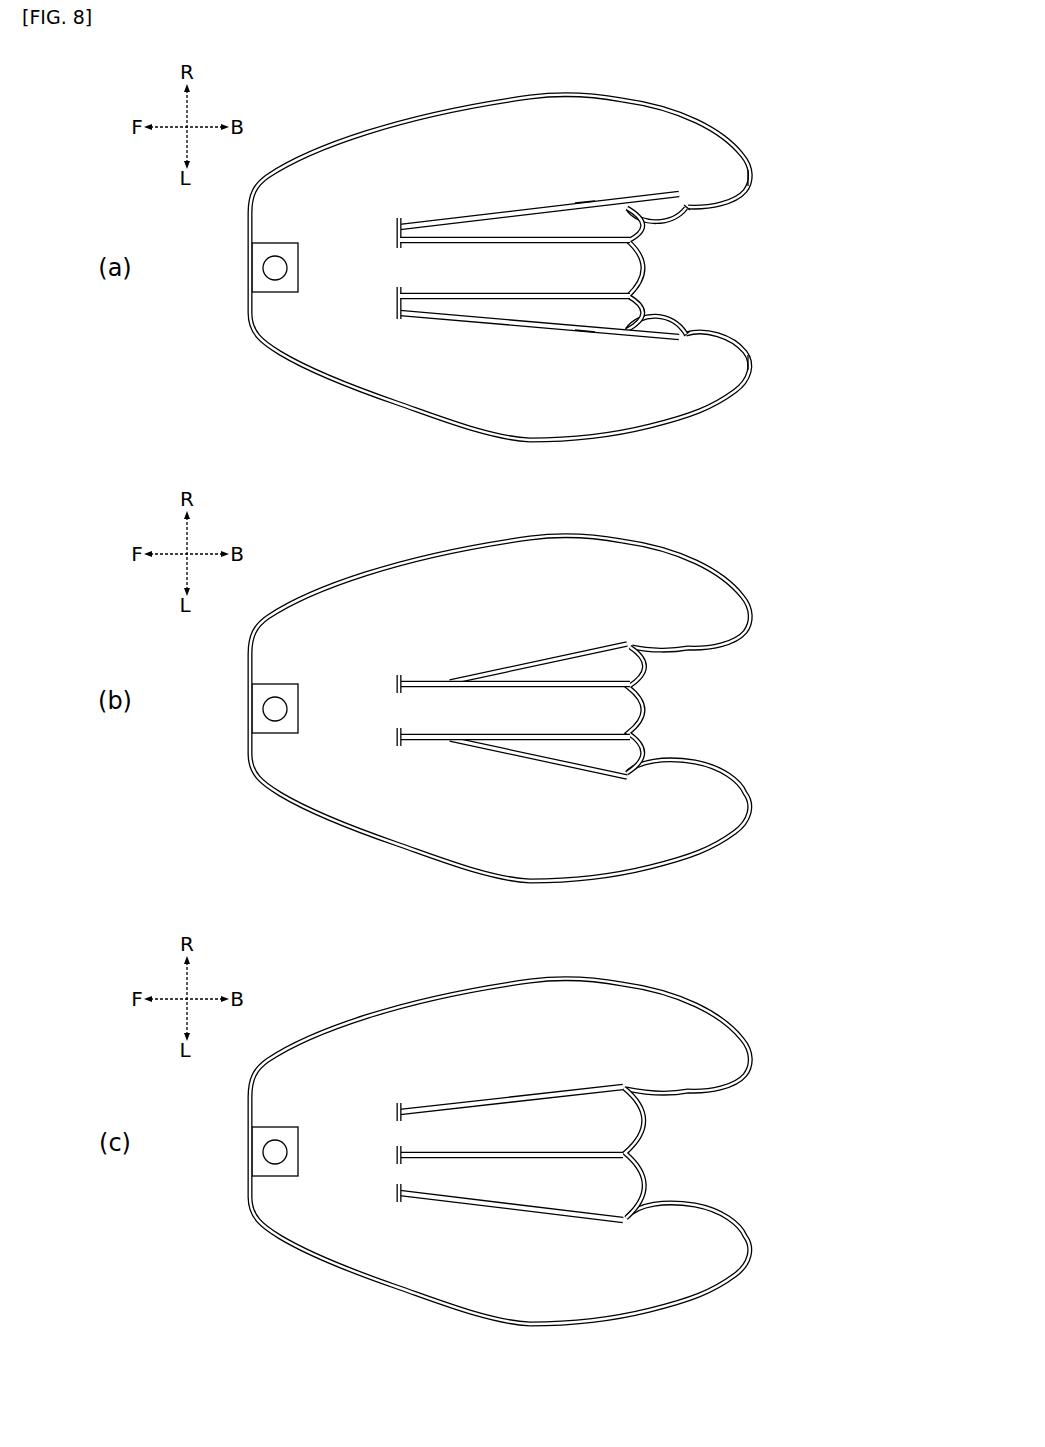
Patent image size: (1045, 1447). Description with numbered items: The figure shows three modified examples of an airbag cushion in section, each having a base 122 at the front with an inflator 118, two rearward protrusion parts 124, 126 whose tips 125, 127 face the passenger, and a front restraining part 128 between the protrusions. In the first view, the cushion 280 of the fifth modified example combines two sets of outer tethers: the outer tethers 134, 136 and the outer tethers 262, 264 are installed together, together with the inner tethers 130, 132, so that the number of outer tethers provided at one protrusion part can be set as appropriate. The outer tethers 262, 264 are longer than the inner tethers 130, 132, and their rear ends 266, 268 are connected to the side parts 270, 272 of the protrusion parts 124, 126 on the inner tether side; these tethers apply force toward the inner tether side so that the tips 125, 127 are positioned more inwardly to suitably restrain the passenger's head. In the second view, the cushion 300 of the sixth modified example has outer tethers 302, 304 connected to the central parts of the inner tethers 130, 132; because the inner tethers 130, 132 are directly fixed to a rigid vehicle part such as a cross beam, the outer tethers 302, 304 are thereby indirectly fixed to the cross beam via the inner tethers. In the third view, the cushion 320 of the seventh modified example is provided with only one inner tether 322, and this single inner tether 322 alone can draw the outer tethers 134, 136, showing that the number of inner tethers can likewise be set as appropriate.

The inflator 118 is at (262, 268).
The base 122 is at (348, 389).
The protrusion part 124 is at (731, 393).
The tip of the protrusion part 125 is at (751, 357).
The protrusion part 126 is at (733, 145).
The tip of the protrusion part 127 is at (750, 176).
The front restraining part 128 is at (648, 265).
The inner tether 130 is at (452, 300).
The inner tether 132 is at (455, 240).
The outer tether 134 is at (535, 326).
The outer tether 136 is at (533, 210).
The outer tether 262 is at (585, 330).
The outer tether 264 is at (584, 203).
The rear end of the outer tether 266 is at (680, 332).
The rear end of the outer tether 268 is at (670, 214).
The side part of the protrusion part 270 is at (688, 333).
The side part of the protrusion part 272 is at (688, 209).
The cushion of Modified Example 5 280 is at (355, 135).
The cushion of Modified Example 6 300 is at (436, 633).
The outer tether 302 is at (538, 785).
The outer tether 304 is at (538, 638).
The cushion of Modified Example 7 320 is at (436, 1076).
The inner tether 322 is at (511, 1111).